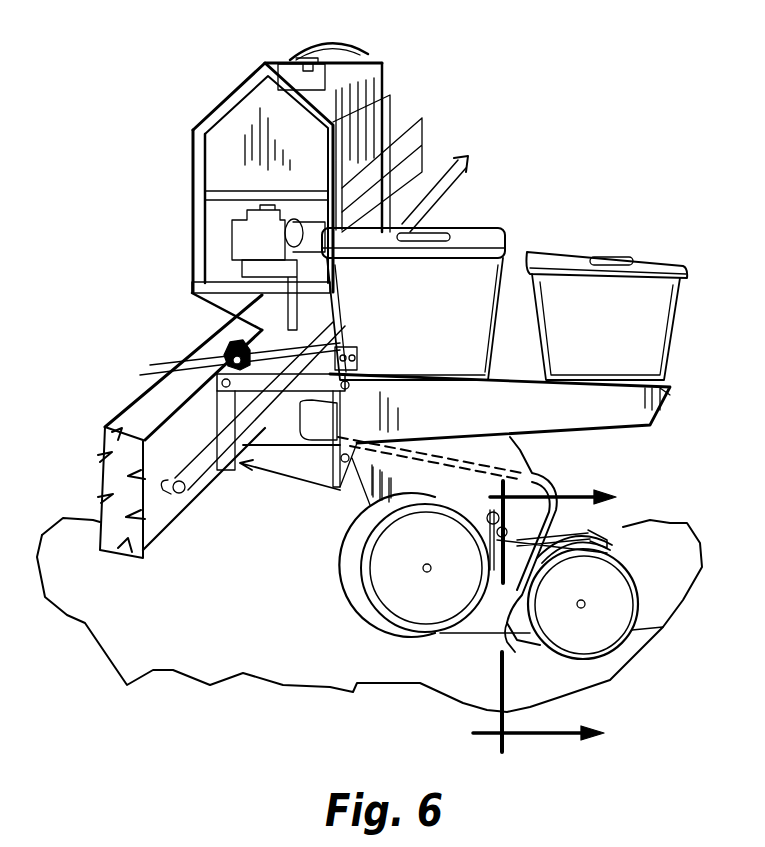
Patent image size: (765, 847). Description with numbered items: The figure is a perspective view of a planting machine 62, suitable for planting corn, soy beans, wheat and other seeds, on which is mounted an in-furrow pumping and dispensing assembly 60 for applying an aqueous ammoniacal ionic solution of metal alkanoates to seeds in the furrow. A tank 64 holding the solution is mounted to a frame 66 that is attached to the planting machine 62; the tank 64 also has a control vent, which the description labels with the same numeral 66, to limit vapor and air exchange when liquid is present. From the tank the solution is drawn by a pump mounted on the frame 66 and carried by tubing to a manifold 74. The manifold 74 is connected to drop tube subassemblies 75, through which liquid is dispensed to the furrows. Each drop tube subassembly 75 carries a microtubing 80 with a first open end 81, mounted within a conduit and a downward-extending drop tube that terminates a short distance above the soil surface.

The in-furrow pumping and dispensing assembly 60 is at (393, 128).
The planting machine 62 is at (369, 376).
The tank 64 is at (360, 58).
The frame 66 is at (320, 50).
The manifold 74 is at (460, 187).
The drop tube subassembly 75 is at (550, 480).
The microtubing 80 is at (538, 630).
The first open end 81 is at (513, 645).